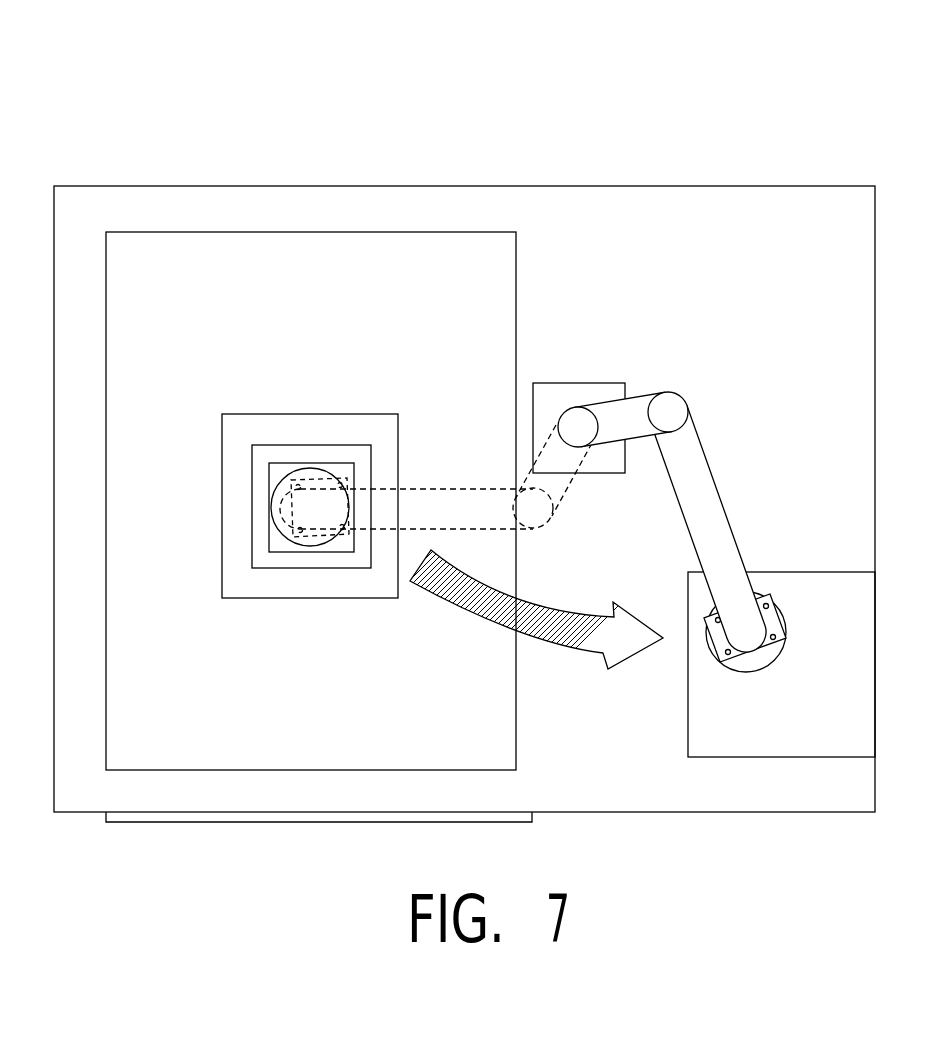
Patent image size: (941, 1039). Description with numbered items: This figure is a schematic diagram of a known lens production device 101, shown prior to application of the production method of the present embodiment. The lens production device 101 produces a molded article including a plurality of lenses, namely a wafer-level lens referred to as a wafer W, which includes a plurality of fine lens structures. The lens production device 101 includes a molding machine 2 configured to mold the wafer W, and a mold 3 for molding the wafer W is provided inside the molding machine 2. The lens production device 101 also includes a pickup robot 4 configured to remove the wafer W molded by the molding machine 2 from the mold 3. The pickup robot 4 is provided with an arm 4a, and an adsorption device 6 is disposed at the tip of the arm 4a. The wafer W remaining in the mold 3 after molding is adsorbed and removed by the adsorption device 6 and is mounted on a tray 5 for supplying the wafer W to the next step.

The lens production device 101 is at (822, 175).
The molding machine 2 is at (516, 705).
The mold 3 is at (325, 568).
The pickup robot 4 is at (532, 474).
The arm 4a is at (710, 463).
The tray 5 is at (688, 580).
The adsorption device 6 is at (779, 611).
The wafer W is at (286, 478).